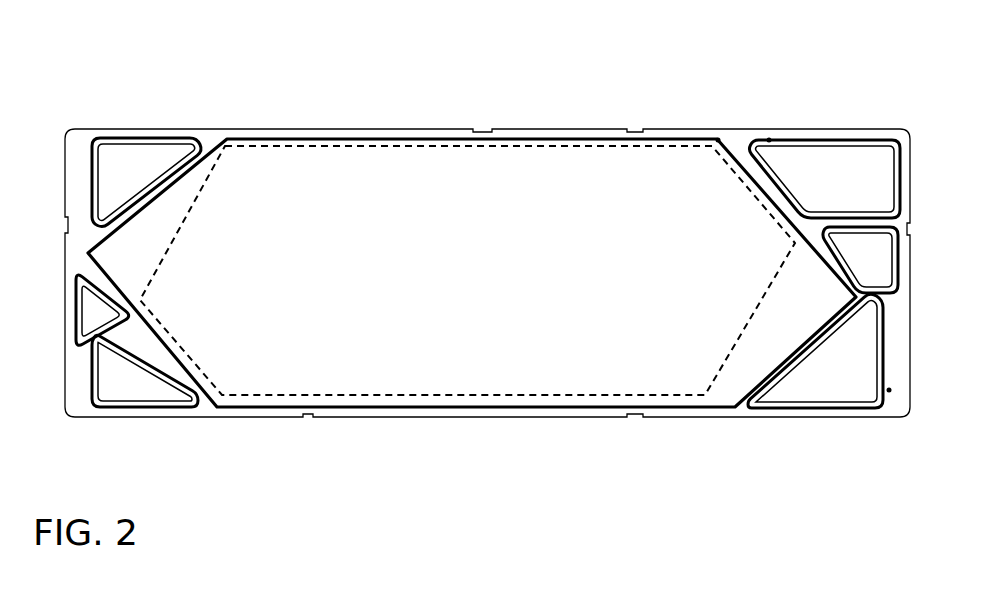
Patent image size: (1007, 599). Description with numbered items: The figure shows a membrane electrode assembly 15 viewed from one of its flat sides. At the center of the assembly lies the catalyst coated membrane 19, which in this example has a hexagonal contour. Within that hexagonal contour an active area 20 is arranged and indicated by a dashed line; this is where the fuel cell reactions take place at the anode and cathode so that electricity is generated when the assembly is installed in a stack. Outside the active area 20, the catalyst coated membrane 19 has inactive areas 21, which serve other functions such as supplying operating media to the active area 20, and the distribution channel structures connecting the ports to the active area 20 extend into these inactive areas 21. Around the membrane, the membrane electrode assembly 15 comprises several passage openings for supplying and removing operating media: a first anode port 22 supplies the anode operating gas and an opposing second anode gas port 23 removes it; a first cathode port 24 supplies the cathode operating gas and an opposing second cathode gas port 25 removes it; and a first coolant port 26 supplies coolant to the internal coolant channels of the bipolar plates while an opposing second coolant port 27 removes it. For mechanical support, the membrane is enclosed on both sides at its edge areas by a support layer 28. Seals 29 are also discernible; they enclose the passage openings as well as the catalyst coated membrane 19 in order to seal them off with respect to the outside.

The membrane electrode assembly 15 is at (206, 83).
The catalyst coated membrane 19 is at (378, 174).
The active area 20 is at (479, 285).
The inactive areas 21 is at (157, 257).
The first anode port 22 is at (114, 327).
The second anode gas port 23 is at (878, 268).
The first cathode port 24 is at (137, 187).
The second cathode gas port 25 is at (840, 388).
The first coolant port 26 is at (143, 386).
The second coolant port 27 is at (842, 191).
The support layer 28 is at (889, 390).
The seals 29 is at (769, 140).